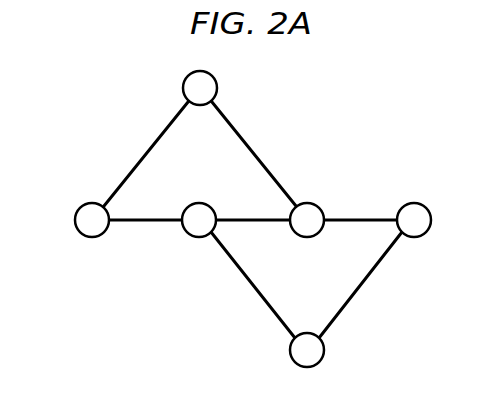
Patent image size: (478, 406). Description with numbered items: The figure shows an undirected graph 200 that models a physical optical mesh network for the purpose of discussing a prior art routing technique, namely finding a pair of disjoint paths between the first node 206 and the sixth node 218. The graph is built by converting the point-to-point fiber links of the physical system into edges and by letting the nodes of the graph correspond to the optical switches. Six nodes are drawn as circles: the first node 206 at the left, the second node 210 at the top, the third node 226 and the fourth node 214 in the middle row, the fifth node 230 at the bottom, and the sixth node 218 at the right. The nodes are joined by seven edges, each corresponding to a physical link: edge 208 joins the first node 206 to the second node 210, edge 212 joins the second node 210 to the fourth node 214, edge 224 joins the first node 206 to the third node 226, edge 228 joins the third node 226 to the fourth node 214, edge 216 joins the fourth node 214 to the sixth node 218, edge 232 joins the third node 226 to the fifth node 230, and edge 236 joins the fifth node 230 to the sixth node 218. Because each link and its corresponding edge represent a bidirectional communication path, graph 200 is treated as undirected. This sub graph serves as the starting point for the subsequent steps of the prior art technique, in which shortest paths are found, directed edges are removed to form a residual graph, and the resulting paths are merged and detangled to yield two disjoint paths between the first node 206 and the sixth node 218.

The undirected graph 200 is at (334, 130).
The node 1 206 is at (78, 206).
The node 2 210 is at (187, 75).
The node 3 226 is at (192, 203).
The node 4 214 is at (322, 206).
The node 5 230 is at (322, 363).
The node 6 218 is at (410, 203).
The edge 208 is at (145, 148).
The edge 212 is at (244, 134).
The edge 224 is at (143, 222).
The edge 228 is at (250, 222).
The edge 216 is at (370, 222).
The edge 232 is at (242, 281).
The edge 236 is at (366, 284).